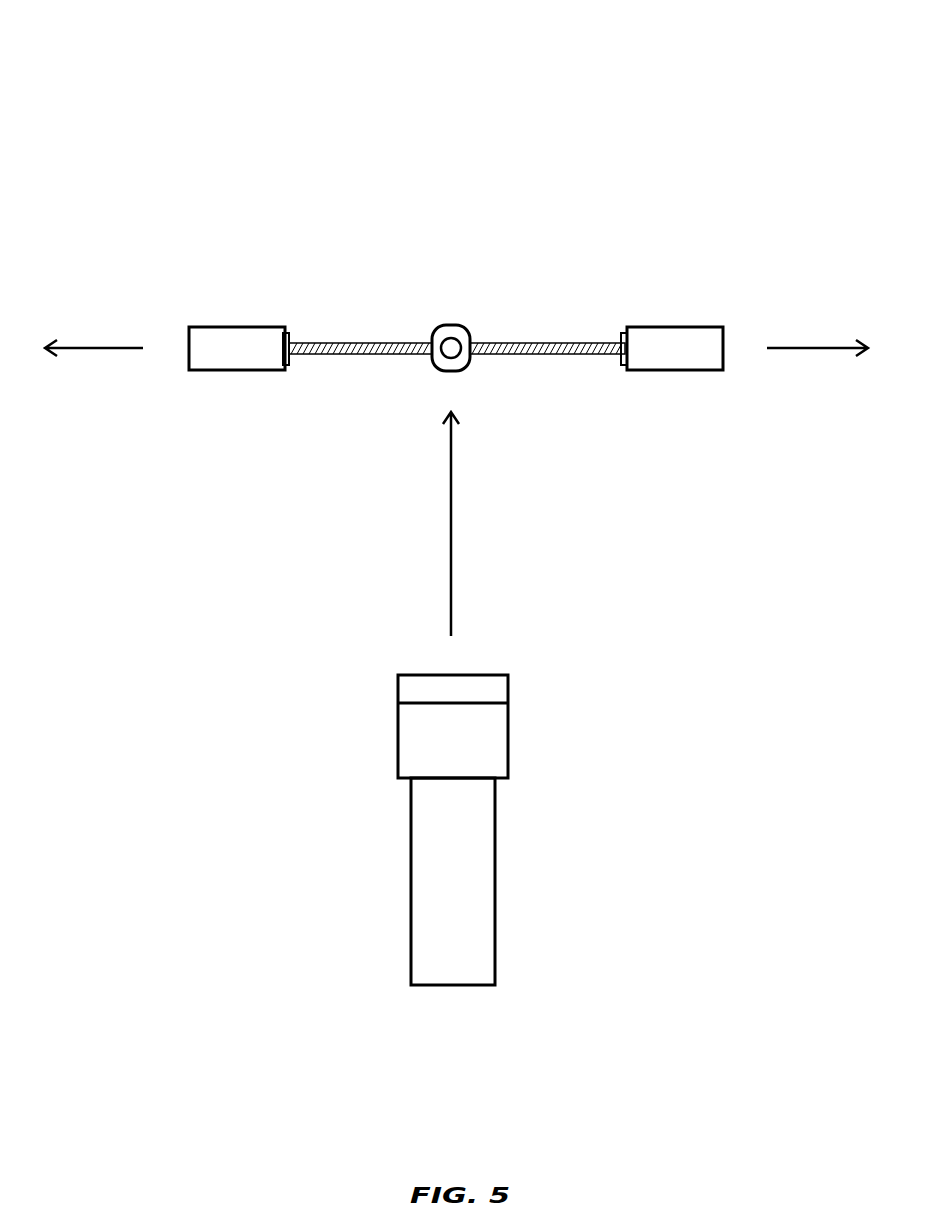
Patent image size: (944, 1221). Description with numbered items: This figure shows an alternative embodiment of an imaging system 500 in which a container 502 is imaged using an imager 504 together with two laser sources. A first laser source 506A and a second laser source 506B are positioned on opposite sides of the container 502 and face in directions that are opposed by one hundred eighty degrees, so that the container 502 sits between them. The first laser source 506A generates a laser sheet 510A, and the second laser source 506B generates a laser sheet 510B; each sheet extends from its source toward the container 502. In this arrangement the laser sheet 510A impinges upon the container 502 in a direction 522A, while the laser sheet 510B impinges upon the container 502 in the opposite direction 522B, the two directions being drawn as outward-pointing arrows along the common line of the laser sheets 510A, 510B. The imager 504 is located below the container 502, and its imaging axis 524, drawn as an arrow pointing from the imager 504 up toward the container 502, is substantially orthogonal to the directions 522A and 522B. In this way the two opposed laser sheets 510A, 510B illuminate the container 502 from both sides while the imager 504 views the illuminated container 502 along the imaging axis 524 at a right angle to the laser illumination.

The imaging system 500 is at (128, 46).
The container 502 is at (463, 324).
The imager 504 is at (498, 825).
The first laser source 506A is at (222, 326).
The second laser source 506B is at (700, 326).
The laser sheet 510A is at (334, 343).
The laser sheet 510B is at (532, 342).
The direction 522A is at (822, 350).
The direction 522B is at (90, 350).
The imaging axis 524 is at (452, 496).